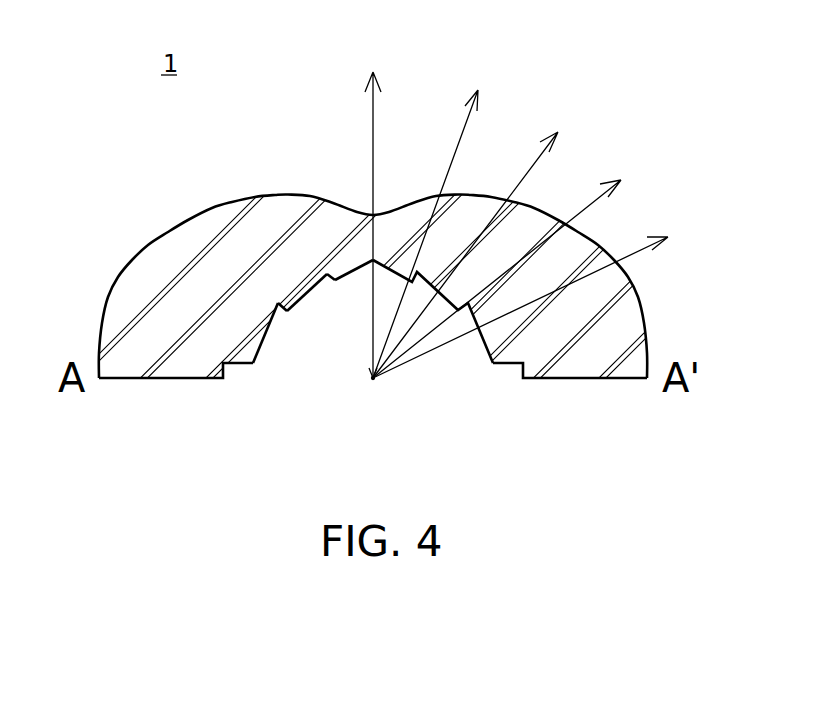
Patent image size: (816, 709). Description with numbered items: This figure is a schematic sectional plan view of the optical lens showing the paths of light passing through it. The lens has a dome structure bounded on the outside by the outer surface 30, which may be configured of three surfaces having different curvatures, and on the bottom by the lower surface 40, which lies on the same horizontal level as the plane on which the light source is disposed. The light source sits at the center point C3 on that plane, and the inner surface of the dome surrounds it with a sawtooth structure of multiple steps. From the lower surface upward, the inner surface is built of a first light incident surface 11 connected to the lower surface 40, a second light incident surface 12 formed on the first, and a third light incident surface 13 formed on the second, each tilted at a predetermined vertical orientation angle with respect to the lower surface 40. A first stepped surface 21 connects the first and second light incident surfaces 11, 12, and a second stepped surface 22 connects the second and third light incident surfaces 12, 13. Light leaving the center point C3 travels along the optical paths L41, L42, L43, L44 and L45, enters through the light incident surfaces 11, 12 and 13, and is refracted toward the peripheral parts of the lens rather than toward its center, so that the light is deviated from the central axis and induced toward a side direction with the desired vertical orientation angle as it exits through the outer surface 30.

The first light incident surface 11 is at (263, 335).
The second light incident surface 12 is at (308, 283).
The third light incident surface 13 is at (347, 272).
The first stepped surface 21 is at (272, 317).
The second stepped surface 22 is at (318, 278).
The outer surface 30 is at (151, 224).
The lower surface 40 is at (600, 379).
The center point C3 is at (377, 391).
The optical path L41 is at (548, 301).
The optical path L42 is at (523, 267).
The optical path L43 is at (491, 243).
The optical path L44 is at (443, 218).
The optical path L45 is at (375, 211).